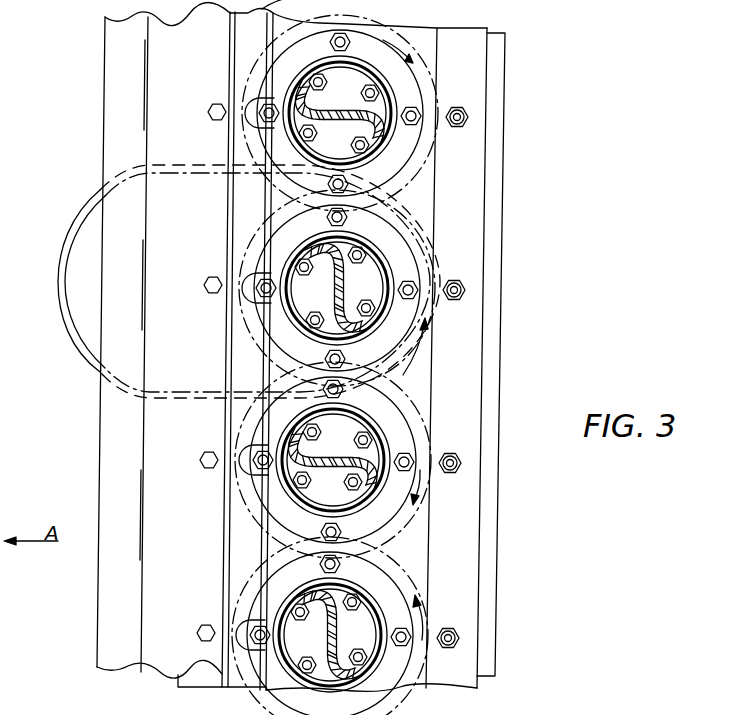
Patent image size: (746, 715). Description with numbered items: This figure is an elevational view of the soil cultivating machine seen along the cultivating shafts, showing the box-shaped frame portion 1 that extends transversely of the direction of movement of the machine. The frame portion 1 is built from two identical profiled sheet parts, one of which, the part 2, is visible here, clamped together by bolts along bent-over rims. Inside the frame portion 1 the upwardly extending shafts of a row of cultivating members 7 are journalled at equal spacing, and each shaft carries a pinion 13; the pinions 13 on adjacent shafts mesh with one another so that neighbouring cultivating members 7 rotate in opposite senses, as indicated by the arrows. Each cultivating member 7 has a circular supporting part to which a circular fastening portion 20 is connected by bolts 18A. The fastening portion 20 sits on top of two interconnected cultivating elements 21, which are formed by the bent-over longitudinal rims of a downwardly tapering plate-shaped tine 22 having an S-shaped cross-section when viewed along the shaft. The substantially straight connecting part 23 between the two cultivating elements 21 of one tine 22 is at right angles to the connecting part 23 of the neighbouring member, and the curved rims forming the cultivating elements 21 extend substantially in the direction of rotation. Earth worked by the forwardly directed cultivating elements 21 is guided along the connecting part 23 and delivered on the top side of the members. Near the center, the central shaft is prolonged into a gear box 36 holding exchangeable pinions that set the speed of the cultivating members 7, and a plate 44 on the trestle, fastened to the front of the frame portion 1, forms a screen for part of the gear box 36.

The box-shaped frame portion 1 is at (492, 83).
The part 2 is at (430, 170).
The cultivating member 7 is at (345, 104).
The pinion 13 is at (281, 566).
The bolts 18A is at (380, 91).
The fastening portion 20 is at (358, 78).
The cultivating elements 21 is at (298, 80).
The plate-shaped tine 22 is at (342, 303).
The connecting part 23 is at (347, 120).
The gear box 36 is at (86, 338).
The plate 44 is at (108, 106).